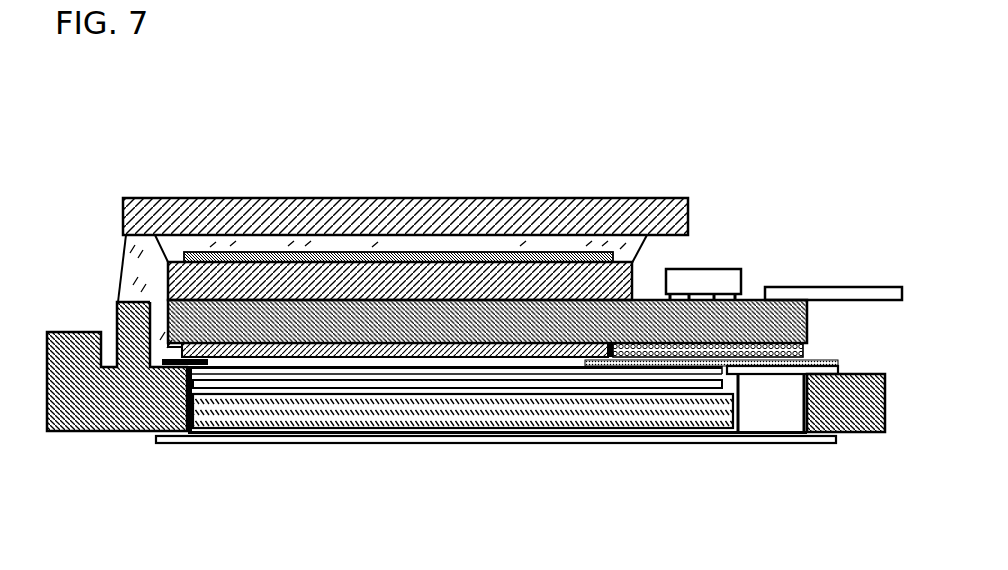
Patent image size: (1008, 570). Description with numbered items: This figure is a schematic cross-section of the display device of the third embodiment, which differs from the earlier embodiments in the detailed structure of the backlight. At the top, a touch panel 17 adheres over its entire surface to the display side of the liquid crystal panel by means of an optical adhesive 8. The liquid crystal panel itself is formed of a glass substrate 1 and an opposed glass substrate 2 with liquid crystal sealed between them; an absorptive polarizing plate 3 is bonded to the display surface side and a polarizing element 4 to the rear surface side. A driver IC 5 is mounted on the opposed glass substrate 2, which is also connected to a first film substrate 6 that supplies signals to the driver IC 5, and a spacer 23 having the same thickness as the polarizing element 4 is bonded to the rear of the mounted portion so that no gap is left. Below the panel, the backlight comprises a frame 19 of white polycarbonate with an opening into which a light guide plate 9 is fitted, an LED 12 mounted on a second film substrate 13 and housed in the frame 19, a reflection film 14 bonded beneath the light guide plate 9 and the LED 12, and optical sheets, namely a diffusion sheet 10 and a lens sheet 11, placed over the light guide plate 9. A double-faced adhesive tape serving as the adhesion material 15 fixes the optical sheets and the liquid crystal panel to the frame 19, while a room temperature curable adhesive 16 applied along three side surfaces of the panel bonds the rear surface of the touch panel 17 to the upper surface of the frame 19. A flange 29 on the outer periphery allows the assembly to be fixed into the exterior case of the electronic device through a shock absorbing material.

The glass substrate 1 is at (487, 214).
The opposed glass substrate 2 is at (676, 419).
The absorptive polarizing plate 3 is at (400, 191).
The polarizing element 4 is at (397, 429).
The driver IC 5 is at (723, 208).
The first film substrate 6 is at (833, 217).
The optical adhesive 8 is at (405, 169).
The light guide plate 9 is at (463, 458).
The diffusion sheet 10 is at (457, 461).
The lens sheet 11 is at (496, 458).
The LED 12 is at (836, 446).
The second film substrate 13 is at (771, 463).
The reflection film 14 is at (513, 452).
The adhesion material 15 is at (149, 421).
The adhesive 16 is at (382, 224).
The touch panel 17 is at (398, 184).
The frame 19 is at (144, 428).
The spacer 23 is at (716, 252).
The flange 29 is at (98, 304).